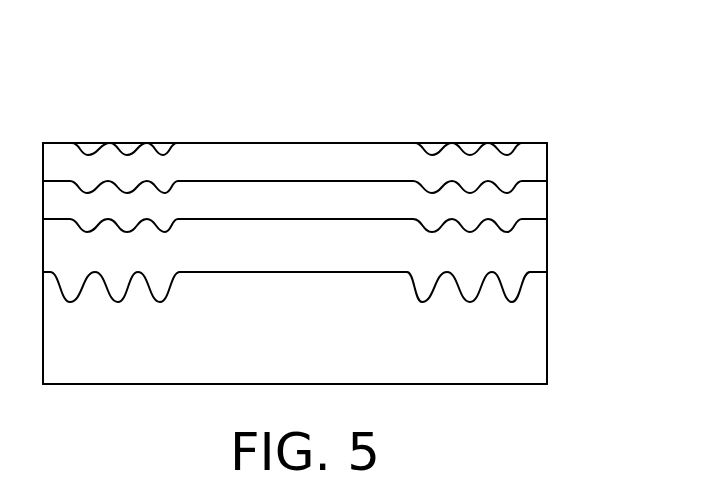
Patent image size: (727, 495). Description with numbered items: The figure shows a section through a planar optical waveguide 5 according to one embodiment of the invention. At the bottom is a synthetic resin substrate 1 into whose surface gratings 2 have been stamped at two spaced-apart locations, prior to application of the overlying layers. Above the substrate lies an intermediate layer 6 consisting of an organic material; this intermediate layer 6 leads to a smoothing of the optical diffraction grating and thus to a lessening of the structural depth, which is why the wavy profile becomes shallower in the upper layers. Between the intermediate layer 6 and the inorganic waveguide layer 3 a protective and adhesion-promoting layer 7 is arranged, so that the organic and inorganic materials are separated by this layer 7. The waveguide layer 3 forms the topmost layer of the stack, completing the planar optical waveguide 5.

The planar optical waveguide 5 is at (458, 93).
The synthetic resin substrate 1 is at (522, 340).
The gratings 2 is at (525, 287).
The intermediate layer 6 is at (525, 245).
The protective and adhesion-promoting layer 7 is at (520, 193).
The waveguide layer 3 is at (532, 158).